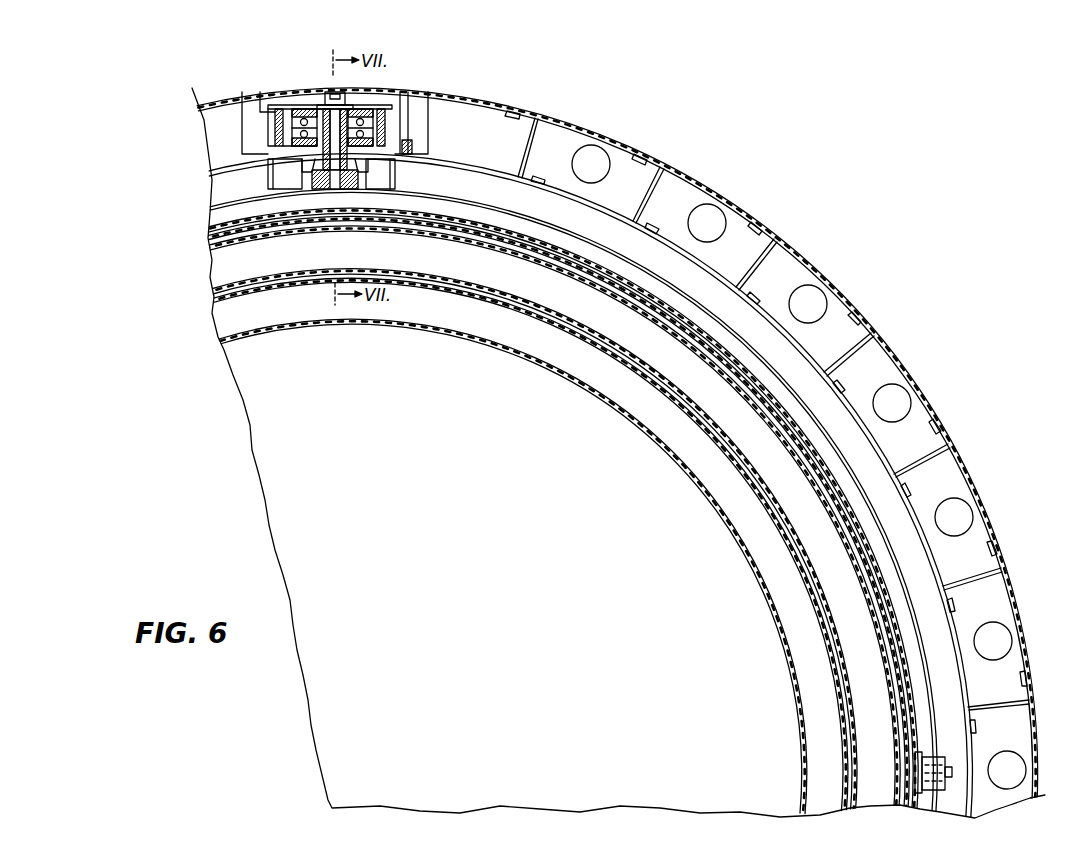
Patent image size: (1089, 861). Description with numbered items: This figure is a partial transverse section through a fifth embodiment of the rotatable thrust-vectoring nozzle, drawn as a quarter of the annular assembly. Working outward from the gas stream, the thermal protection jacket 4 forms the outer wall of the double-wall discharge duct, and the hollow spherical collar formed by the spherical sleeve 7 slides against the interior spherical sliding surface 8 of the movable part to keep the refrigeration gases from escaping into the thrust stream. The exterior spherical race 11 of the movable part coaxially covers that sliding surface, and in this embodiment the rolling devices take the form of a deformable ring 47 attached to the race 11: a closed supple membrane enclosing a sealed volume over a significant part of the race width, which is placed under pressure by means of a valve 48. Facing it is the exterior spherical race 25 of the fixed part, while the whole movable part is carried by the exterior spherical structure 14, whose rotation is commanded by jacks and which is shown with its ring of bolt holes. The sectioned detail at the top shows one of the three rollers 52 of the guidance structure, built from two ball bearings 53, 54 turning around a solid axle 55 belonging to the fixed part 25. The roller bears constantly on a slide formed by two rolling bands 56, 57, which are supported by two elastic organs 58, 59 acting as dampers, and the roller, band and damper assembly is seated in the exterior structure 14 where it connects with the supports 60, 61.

The thermal protection jacket 4 is at (470, 336).
The spherical sleeve 7 is at (528, 309).
The spherical sliding surface 8 is at (578, 322).
The exterior spherical race 11 is at (648, 318).
The exterior spherical structure 14 is at (490, 99).
The exterior spherical race of the fixed part 25 is at (757, 311).
The deformable ring 47 is at (679, 284).
The valve 48 is at (937, 757).
The roller 52 is at (297, 97).
The ball bearing 53 is at (367, 106).
The ball bearing 54 is at (370, 150).
The solid axle 55 is at (323, 176).
The rolling band 56 is at (386, 120).
The rolling band 57 is at (274, 119).
The elastic organ 58 is at (398, 132).
The elastic organ 59 is at (272, 132).
The support 60 is at (410, 154).
The support 61 is at (307, 147).